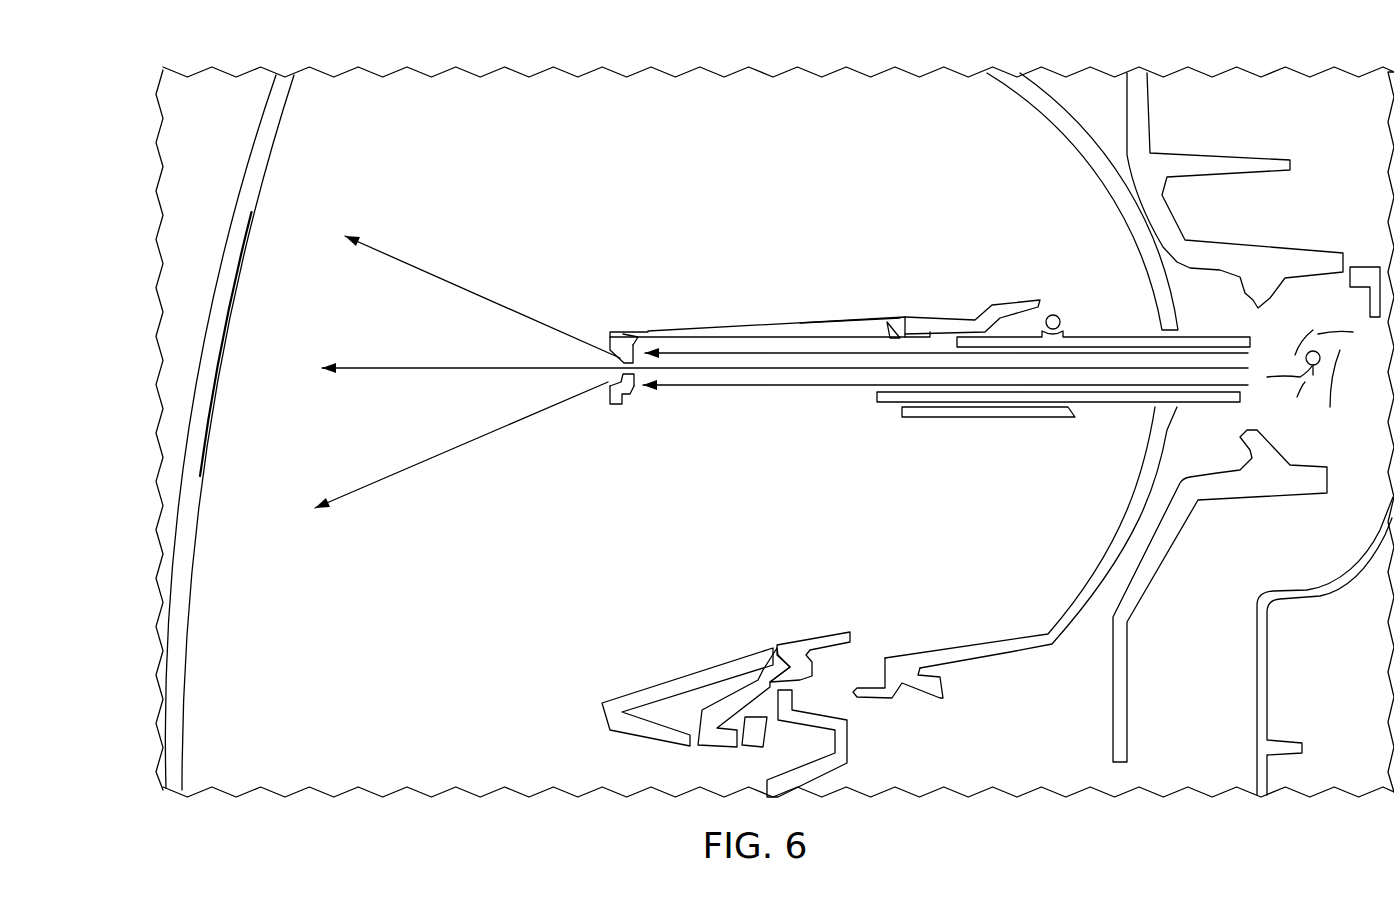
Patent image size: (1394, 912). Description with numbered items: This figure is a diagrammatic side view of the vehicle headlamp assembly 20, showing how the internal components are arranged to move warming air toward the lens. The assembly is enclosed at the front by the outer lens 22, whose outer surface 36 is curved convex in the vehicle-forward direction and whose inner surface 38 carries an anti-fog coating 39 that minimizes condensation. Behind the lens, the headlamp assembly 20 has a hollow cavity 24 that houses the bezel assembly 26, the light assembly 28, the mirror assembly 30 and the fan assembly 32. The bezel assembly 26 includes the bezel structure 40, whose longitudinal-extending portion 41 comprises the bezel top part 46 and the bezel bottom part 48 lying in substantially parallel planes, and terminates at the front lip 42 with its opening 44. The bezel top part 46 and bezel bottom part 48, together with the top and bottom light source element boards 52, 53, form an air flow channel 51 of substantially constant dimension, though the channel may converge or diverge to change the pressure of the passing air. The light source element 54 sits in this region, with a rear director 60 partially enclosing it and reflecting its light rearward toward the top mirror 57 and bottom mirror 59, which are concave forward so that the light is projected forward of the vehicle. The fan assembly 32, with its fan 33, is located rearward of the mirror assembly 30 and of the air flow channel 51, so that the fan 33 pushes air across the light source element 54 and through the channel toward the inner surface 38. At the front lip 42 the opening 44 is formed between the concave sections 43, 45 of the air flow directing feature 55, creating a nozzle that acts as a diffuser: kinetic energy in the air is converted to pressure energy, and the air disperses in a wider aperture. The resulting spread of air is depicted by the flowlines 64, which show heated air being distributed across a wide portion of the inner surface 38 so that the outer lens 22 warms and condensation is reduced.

The headlamp assembly 20 is at (190, 68).
The outer lens 22 is at (228, 288).
The hollow cavity 24 is at (232, 740).
The bezel assembly 26 is at (880, 357).
The light assembly 28 is at (1058, 460).
The mirror assembly 30 is at (1064, 201).
The fan assembly 32 is at (1342, 402).
The fan 33 is at (1312, 366).
The outer surface 36 is at (202, 432).
The inner surface 38 is at (197, 571).
The anti-fog coating 39 is at (247, 236).
The bezel structure 40 is at (790, 328).
The longitudinal-extending portion 41 is at (735, 303).
The front lip 42 is at (612, 346).
The concave section 43 is at (630, 343).
The opening 44 is at (604, 374).
The concave section 45 is at (633, 400).
The bezel top part 46 is at (843, 322).
The bezel bottom part 48 is at (925, 410).
The air flow channel 51 is at (893, 365).
The top light source element board 52 is at (1082, 330).
The bottom light source element board 53 is at (1110, 418).
The light source element 54 is at (1053, 312).
The air flow directing feature 55 is at (676, 396).
The top mirror 57 is at (1112, 197).
The bottom mirror 59 is at (1070, 595).
The rear director 60 is at (988, 300).
The flowlines 64 is at (418, 265).